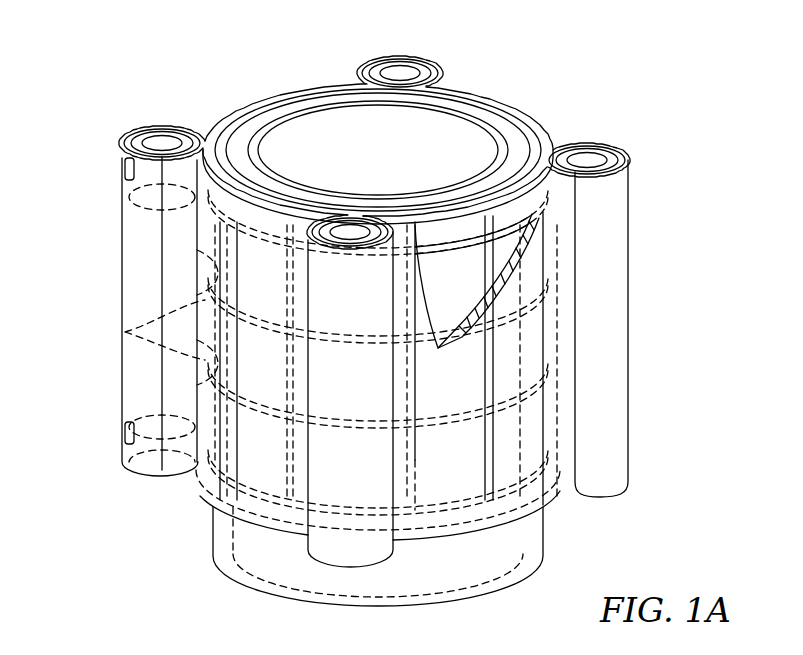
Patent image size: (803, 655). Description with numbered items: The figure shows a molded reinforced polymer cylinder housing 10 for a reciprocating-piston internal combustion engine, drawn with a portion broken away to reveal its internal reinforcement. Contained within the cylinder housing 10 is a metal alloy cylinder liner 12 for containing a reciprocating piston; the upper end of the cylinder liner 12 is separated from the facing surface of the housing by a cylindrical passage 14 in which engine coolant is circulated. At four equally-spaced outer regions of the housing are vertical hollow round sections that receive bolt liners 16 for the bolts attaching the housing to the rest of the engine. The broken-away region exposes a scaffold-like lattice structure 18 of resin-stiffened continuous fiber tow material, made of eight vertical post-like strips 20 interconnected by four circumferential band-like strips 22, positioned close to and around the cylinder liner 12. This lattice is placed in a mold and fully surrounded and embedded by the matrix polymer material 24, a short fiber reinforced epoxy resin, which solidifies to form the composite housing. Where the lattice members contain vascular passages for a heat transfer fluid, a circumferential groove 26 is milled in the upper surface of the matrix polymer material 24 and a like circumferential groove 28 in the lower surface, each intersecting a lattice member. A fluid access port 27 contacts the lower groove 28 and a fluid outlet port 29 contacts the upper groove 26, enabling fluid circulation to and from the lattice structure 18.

The cylinder housing 10 is at (662, 190).
The cylinder liner 12 is at (478, 120).
The cylindrical passage 14 is at (244, 126).
The bolt liners 16 is at (432, 64).
The lattice structure 18 is at (478, 226).
The vertical post-like strips 20 is at (200, 250).
The circumferential band-like strips 22 is at (125, 332).
The matrix polymer material 24 is at (562, 487).
The circumferential groove 26 is at (548, 150).
The fluid access port 27 is at (125, 430).
The circumferential groove 28 is at (200, 500).
The fluid outlet port 29 is at (125, 168).